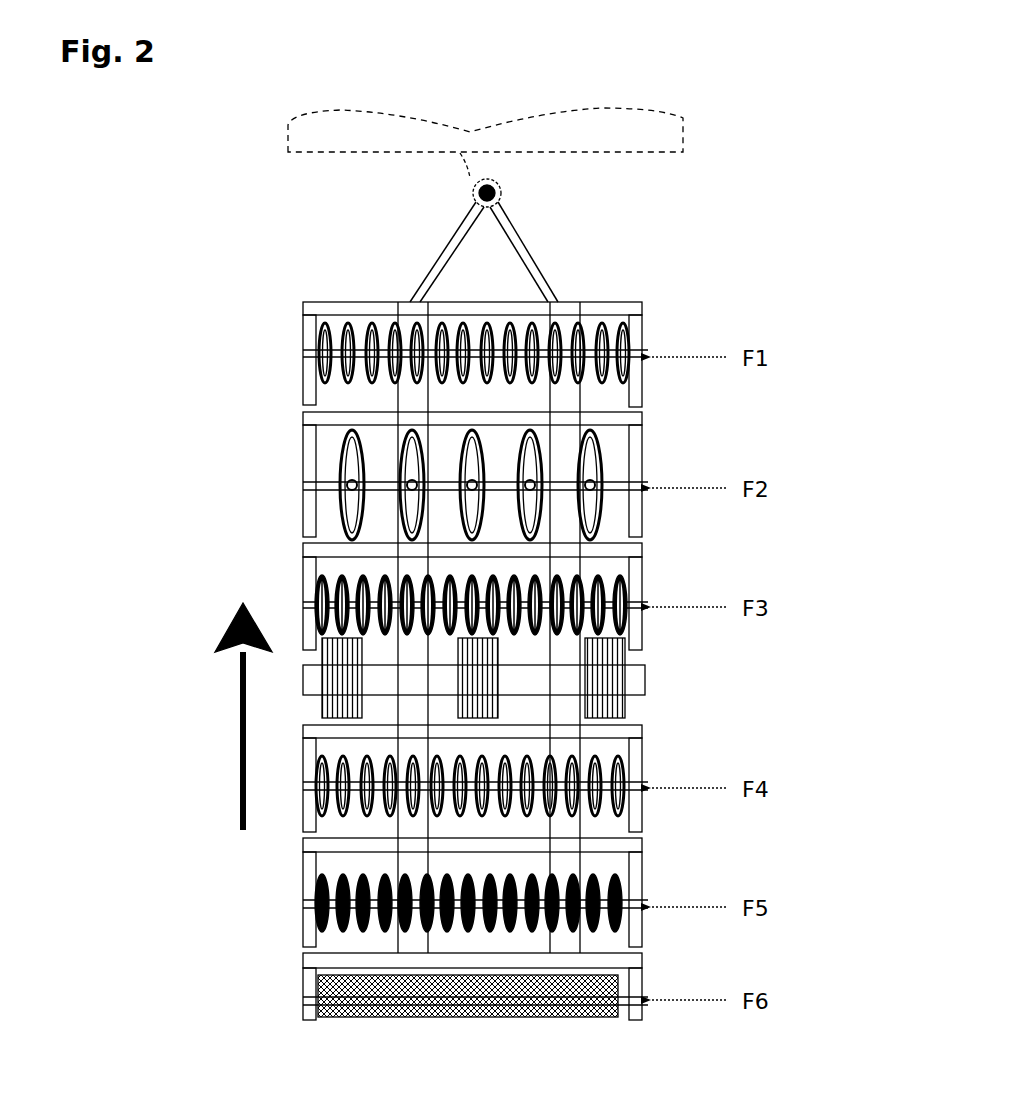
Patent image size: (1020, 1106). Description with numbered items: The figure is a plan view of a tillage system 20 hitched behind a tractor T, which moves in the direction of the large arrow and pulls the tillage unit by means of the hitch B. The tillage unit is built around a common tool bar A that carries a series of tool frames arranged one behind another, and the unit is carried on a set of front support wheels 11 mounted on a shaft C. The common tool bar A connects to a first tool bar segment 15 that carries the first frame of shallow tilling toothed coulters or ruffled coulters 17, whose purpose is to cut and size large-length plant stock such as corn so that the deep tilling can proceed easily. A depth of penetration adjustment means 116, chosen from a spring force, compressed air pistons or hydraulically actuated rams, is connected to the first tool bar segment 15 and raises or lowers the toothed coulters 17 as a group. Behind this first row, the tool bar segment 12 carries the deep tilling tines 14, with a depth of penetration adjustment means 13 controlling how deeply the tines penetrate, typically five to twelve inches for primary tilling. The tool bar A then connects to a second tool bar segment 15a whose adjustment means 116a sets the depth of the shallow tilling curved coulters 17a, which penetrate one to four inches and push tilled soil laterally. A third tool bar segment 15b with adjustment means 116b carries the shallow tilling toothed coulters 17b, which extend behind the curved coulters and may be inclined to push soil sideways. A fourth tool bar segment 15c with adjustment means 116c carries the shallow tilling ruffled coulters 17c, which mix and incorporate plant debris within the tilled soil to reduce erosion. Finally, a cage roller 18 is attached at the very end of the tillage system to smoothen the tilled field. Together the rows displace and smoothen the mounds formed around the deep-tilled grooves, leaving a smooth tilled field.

The harvesting apparatus 20 is at (668, 198).
The tractor T is at (485, 130).
The hitch B is at (504, 180).
The common tool bar A is at (412, 300).
The shaft C is at (473, 678).
The first tool bar segment 15 is at (503, 296).
The depth of penetration adjustment means 116 is at (508, 358).
The shallow tilling toothed coulters 17 is at (503, 353).
The first tool bar segment 12 is at (503, 465).
The depth of penetration adjustment means 13 is at (503, 461).
The deep tilling tines 14 is at (522, 485).
The second tool bar segment 15a is at (507, 538).
The depth of penetration adjustment means 116a is at (512, 597).
The shallow tilling curved coulters 17a is at (507, 605).
The front support wheels 11 is at (503, 680).
The third tool bar segment 15b is at (508, 721).
The depth of penetration adjustment means 116b is at (512, 782).
The shallow tilling toothed coulters 17b is at (508, 786).
The fourth tool bar segment 15c is at (507, 833).
The depth of penetration adjustment means 116c is at (511, 896).
The shallow tilling ruffled coulters 17c is at (507, 903).
The cage roller 18 is at (511, 988).